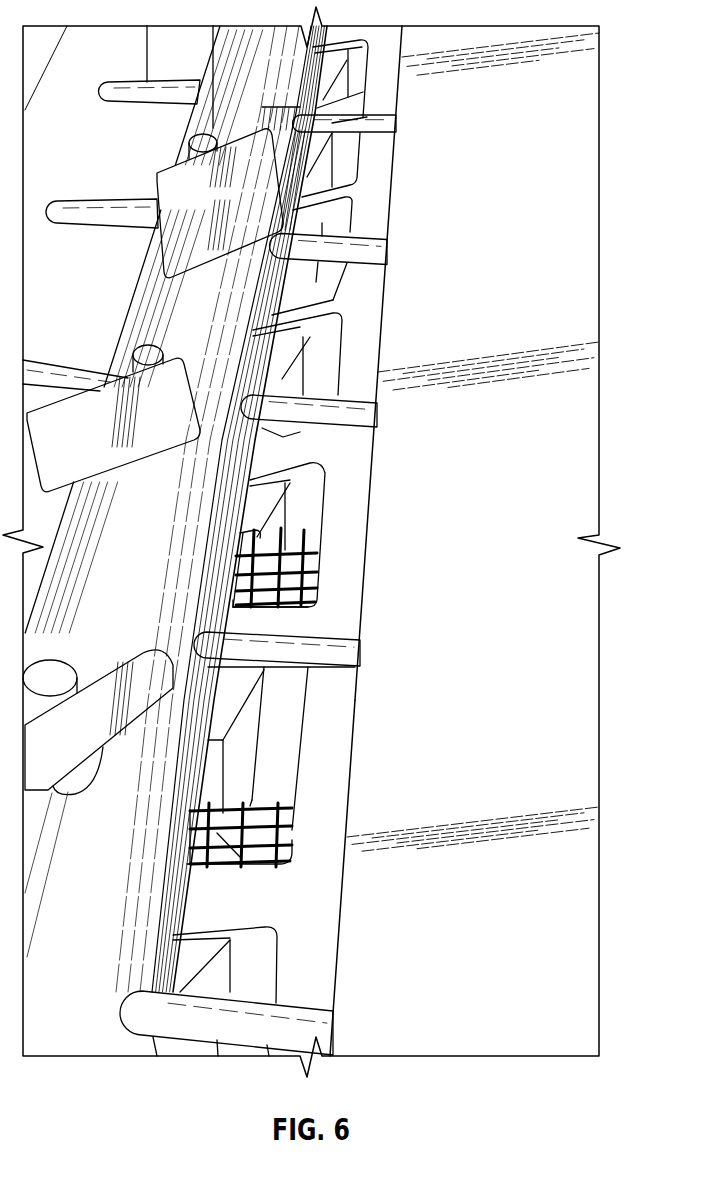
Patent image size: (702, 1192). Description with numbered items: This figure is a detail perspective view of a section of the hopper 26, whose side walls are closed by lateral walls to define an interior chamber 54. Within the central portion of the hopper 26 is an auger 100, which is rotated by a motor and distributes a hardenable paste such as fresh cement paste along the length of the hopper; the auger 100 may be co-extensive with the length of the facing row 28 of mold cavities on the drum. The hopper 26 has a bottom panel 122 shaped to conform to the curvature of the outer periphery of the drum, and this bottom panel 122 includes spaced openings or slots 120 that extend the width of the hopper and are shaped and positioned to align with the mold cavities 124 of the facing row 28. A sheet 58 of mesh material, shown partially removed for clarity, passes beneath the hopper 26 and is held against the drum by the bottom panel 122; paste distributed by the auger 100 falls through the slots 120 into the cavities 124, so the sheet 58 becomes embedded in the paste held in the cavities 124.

The mold cavities 124 is at (347, 157).
The interior chamber 54 is at (577, 303).
The hopper 26 is at (560, 420).
The sheet of mesh material 58 is at (303, 557).
The auger 100 is at (283, 573).
The facing row 28 is at (285, 742).
The slots 120 is at (285, 777).
The bottom panel 122 is at (338, 823).